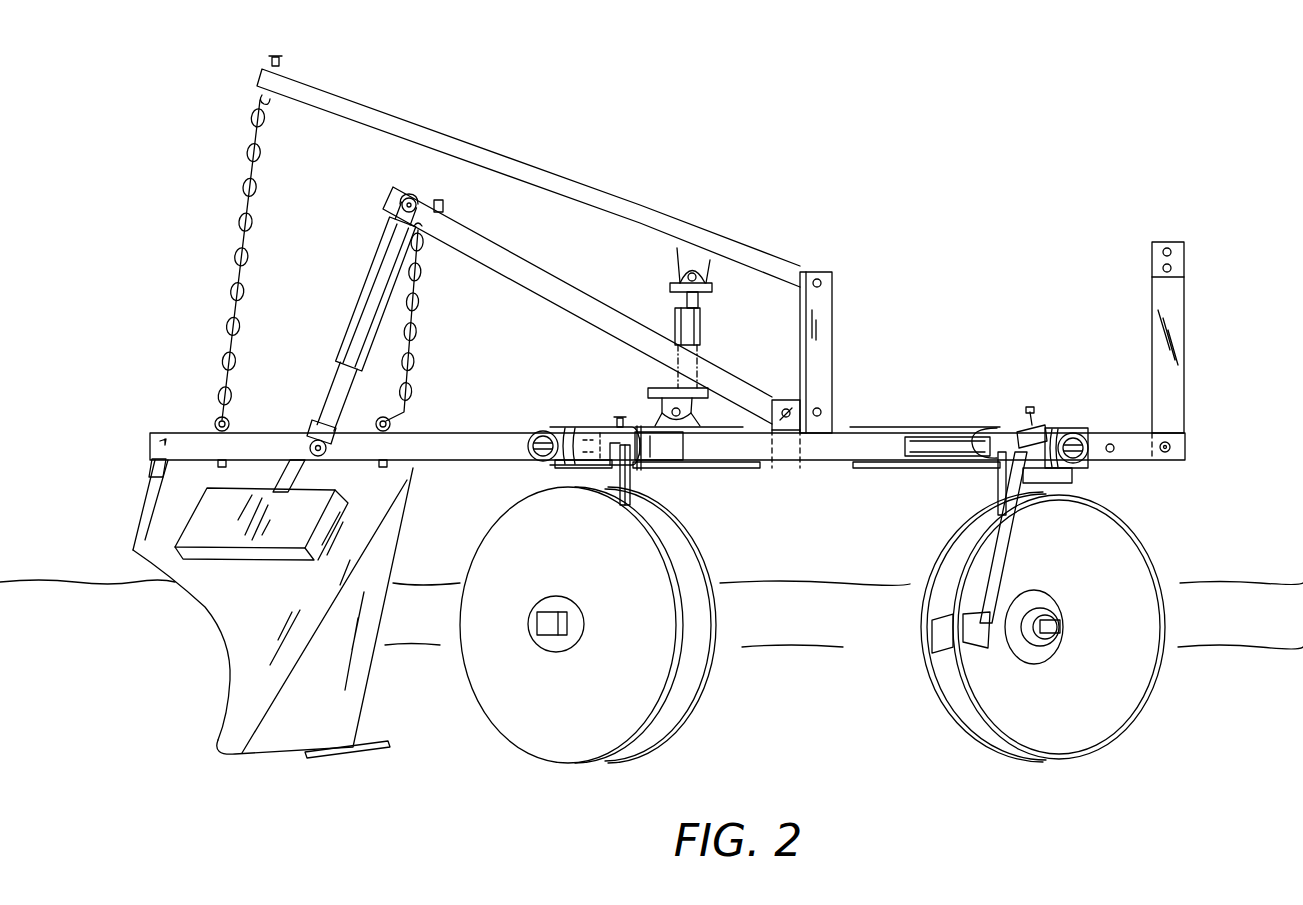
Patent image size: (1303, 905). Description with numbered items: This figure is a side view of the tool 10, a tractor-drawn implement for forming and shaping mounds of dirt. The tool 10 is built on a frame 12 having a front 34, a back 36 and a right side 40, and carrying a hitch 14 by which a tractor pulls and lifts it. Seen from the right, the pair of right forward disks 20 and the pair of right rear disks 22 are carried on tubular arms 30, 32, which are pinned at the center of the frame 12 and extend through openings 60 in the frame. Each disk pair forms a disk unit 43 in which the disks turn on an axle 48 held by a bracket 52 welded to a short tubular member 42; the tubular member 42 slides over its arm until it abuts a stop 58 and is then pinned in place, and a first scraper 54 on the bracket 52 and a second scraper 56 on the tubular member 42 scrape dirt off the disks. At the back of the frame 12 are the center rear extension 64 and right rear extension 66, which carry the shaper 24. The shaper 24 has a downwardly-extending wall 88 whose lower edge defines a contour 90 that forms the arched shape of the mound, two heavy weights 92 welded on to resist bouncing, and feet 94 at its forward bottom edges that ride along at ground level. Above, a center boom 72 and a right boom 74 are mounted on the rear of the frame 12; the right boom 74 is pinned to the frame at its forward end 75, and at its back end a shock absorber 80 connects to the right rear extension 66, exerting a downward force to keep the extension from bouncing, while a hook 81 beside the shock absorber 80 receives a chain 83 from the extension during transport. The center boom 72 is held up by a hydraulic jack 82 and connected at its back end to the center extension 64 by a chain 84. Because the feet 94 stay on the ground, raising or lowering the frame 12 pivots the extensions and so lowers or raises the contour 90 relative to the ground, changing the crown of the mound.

The tool 10 is at (651, 435).
The frame 12 is at (845, 435).
The hitch 14 is at (1192, 262).
The right forward disks 20 is at (672, 732).
The right rear disks 22 is at (565, 752).
The shaper 24 is at (228, 685).
The arm 30 is at (1093, 442).
The arm 32 is at (538, 432).
The front 34 is at (1100, 426).
The back 36 is at (560, 424).
The right side 40 is at (748, 464).
The short tubular member 42 is at (590, 426).
The disk unit 43 is at (798, 650).
The axle 48 is at (538, 625).
The bracket 52 is at (558, 474).
The first scraper 54 is at (942, 640).
The second scraper 56 is at (1002, 560).
The stop 58 is at (637, 426).
The openings 60 is at (672, 468).
The center rear extension 64 is at (178, 432).
The right rear extension 66 is at (285, 440).
The center boom 72 is at (393, 118).
The right boom 74 is at (548, 276).
The forward end pin 75 is at (785, 402).
The shock absorber 80 is at (368, 272).
The hook 81 is at (410, 195).
The hydraulic jack 82 is at (704, 322).
The chain 83 is at (412, 325).
The chain 84 is at (248, 155).
The downwardly-extending wall 88 is at (145, 540).
The contour 90 is at (226, 640).
The heavy weights 92 is at (215, 518).
The feet 94 is at (378, 746).